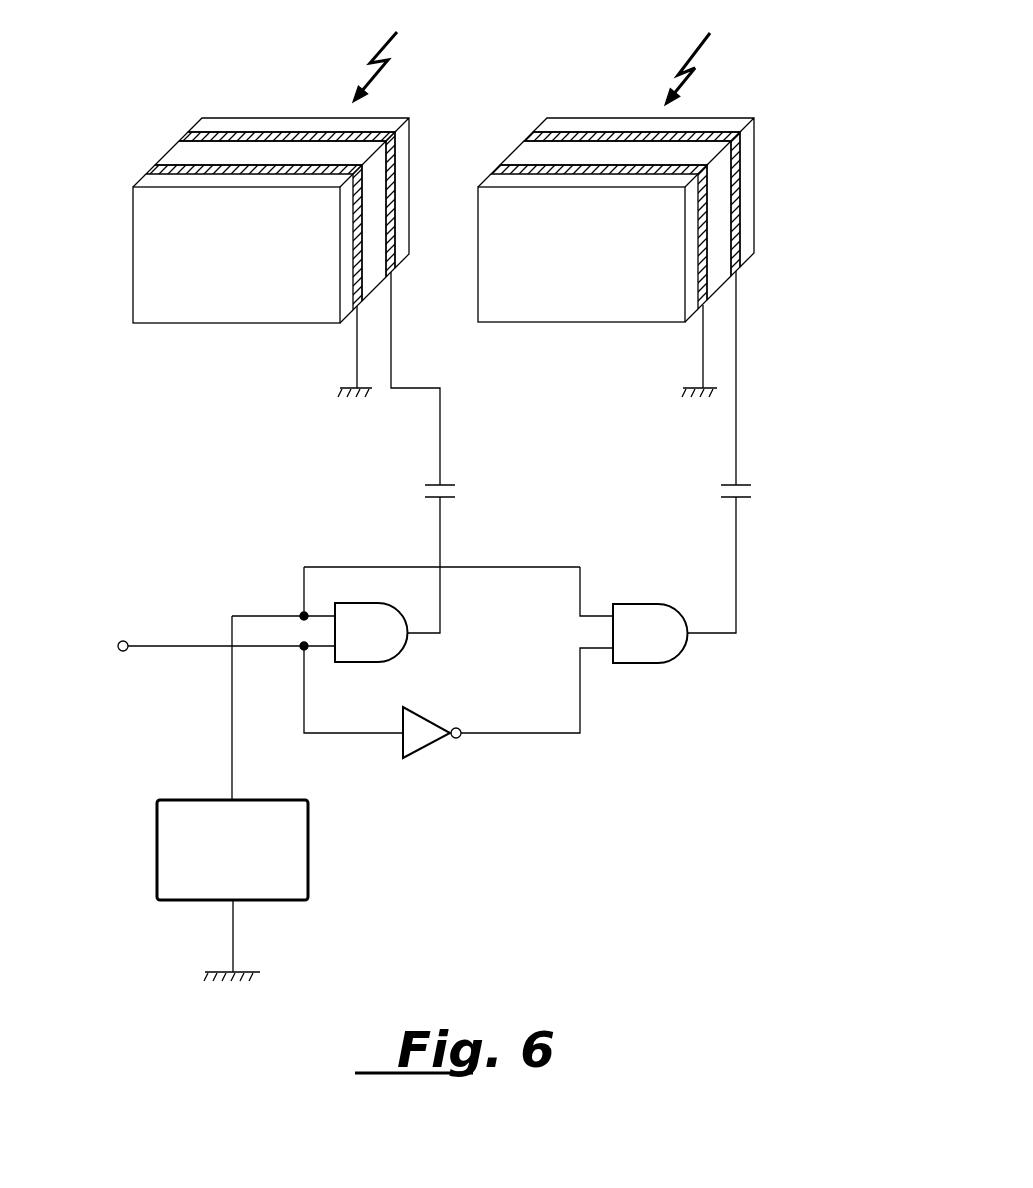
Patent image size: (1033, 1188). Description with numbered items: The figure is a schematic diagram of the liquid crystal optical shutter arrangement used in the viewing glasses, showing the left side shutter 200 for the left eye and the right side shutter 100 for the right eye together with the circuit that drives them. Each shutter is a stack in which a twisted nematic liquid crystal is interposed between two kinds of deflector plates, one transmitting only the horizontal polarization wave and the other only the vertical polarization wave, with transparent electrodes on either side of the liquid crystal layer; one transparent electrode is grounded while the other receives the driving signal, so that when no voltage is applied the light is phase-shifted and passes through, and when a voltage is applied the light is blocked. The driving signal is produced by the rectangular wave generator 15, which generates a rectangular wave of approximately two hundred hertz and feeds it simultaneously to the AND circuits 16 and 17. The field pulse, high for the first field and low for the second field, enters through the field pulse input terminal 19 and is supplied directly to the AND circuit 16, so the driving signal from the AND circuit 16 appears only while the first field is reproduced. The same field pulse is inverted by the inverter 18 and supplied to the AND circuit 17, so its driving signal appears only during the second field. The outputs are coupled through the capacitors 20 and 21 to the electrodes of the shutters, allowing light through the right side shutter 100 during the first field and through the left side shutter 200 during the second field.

The rectangular wave generator 15 is at (308, 870).
The AND circuit 16 is at (383, 650).
The AND circuit 17 is at (652, 622).
The inverter 18 is at (428, 757).
The field pulse input terminal 19 is at (127, 640).
The capacitor 20 is at (448, 480).
The capacitor 21 is at (743, 478).
The right side shutter 100 is at (670, 242).
The left side shutter 200 is at (230, 242).